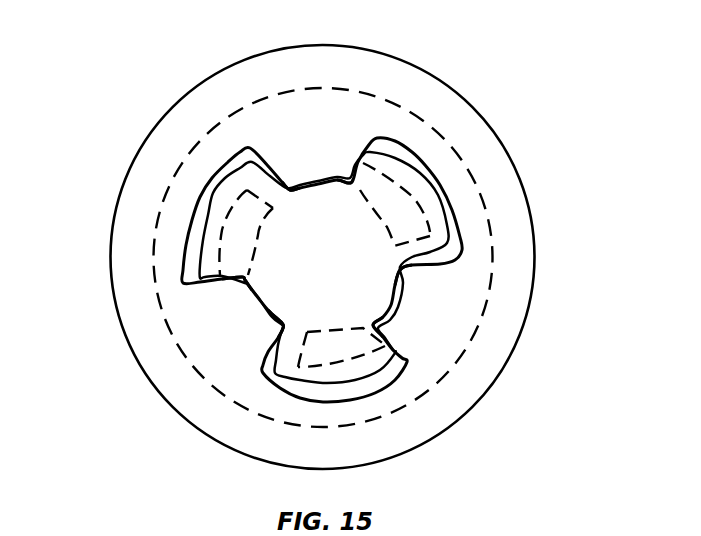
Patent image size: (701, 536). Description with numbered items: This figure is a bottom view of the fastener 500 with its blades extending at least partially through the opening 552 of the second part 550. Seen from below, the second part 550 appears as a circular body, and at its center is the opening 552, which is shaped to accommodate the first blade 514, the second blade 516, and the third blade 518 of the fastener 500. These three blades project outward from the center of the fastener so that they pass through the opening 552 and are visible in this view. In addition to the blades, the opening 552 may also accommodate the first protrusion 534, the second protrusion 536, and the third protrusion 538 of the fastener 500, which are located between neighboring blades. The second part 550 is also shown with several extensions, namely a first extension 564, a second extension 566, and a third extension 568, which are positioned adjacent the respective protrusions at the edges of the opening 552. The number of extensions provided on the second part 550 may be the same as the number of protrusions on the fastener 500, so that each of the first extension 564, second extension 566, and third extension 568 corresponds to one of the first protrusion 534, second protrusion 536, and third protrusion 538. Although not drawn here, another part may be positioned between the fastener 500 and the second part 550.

The fastener 500 is at (450, 146).
The second part 550 is at (520, 185).
The opening 552 is at (178, 255).
The first blade 514 is at (447, 234).
The second blade 516 is at (233, 178).
The third blade 518 is at (288, 386).
The first protrusion 534 is at (343, 183).
The first extension 564 is at (290, 188).
The second protrusion 536 is at (373, 320).
The second extension 566 is at (407, 272).
The third protrusion 538 is at (257, 293).
The third extension 568 is at (280, 332).